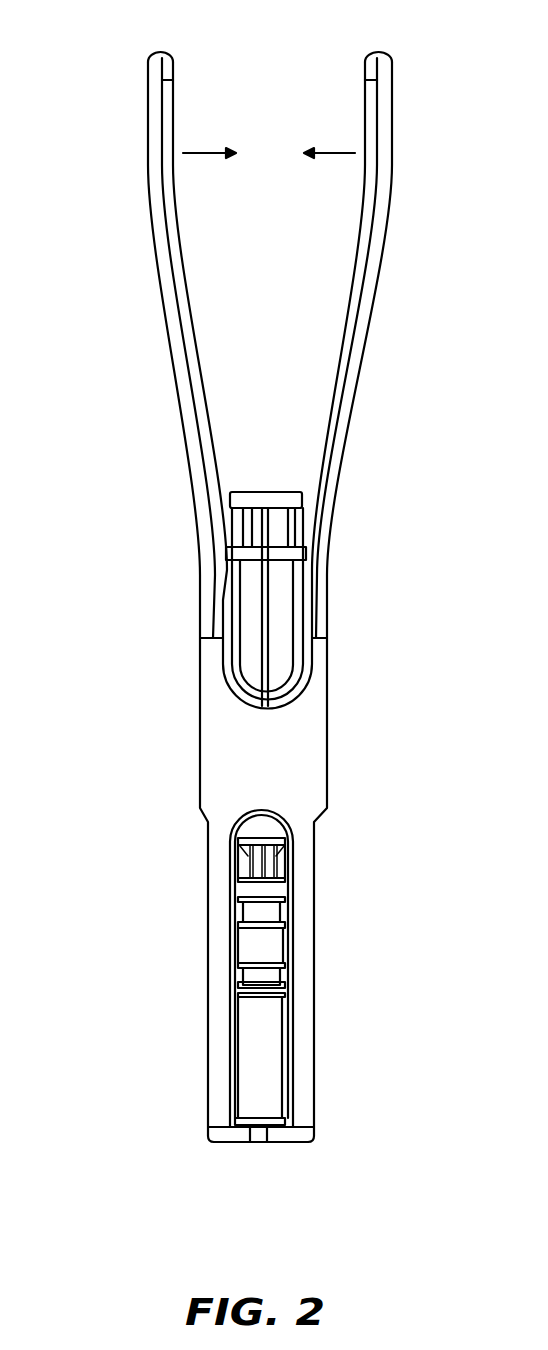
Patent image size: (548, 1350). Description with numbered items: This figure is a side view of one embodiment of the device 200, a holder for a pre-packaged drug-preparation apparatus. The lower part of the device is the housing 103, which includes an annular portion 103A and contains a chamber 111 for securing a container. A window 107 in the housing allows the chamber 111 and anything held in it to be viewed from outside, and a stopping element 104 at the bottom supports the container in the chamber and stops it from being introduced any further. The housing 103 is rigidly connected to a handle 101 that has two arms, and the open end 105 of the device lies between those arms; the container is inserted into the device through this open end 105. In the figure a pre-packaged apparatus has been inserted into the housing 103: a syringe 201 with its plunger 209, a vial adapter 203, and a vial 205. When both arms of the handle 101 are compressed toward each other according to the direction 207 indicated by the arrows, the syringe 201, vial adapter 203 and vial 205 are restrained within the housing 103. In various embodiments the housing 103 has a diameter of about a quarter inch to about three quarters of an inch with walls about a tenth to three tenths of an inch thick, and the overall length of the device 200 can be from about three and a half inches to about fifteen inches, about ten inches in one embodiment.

The device 200 is at (50, 108).
The handle 101 is at (153, 53).
The direction 207 is at (290, 216).
The plunger 209 is at (267, 492).
The syringe 201 is at (272, 612).
The open end 105 is at (257, 697).
The housing 103 is at (232, 765).
The annular portion 103A is at (343, 702).
The chamber 111 is at (282, 869).
The window 107 is at (236, 949).
The vial adapter 203 is at (265, 948).
The vial 205 is at (263, 1062).
The stopping element 104 is at (238, 1143).